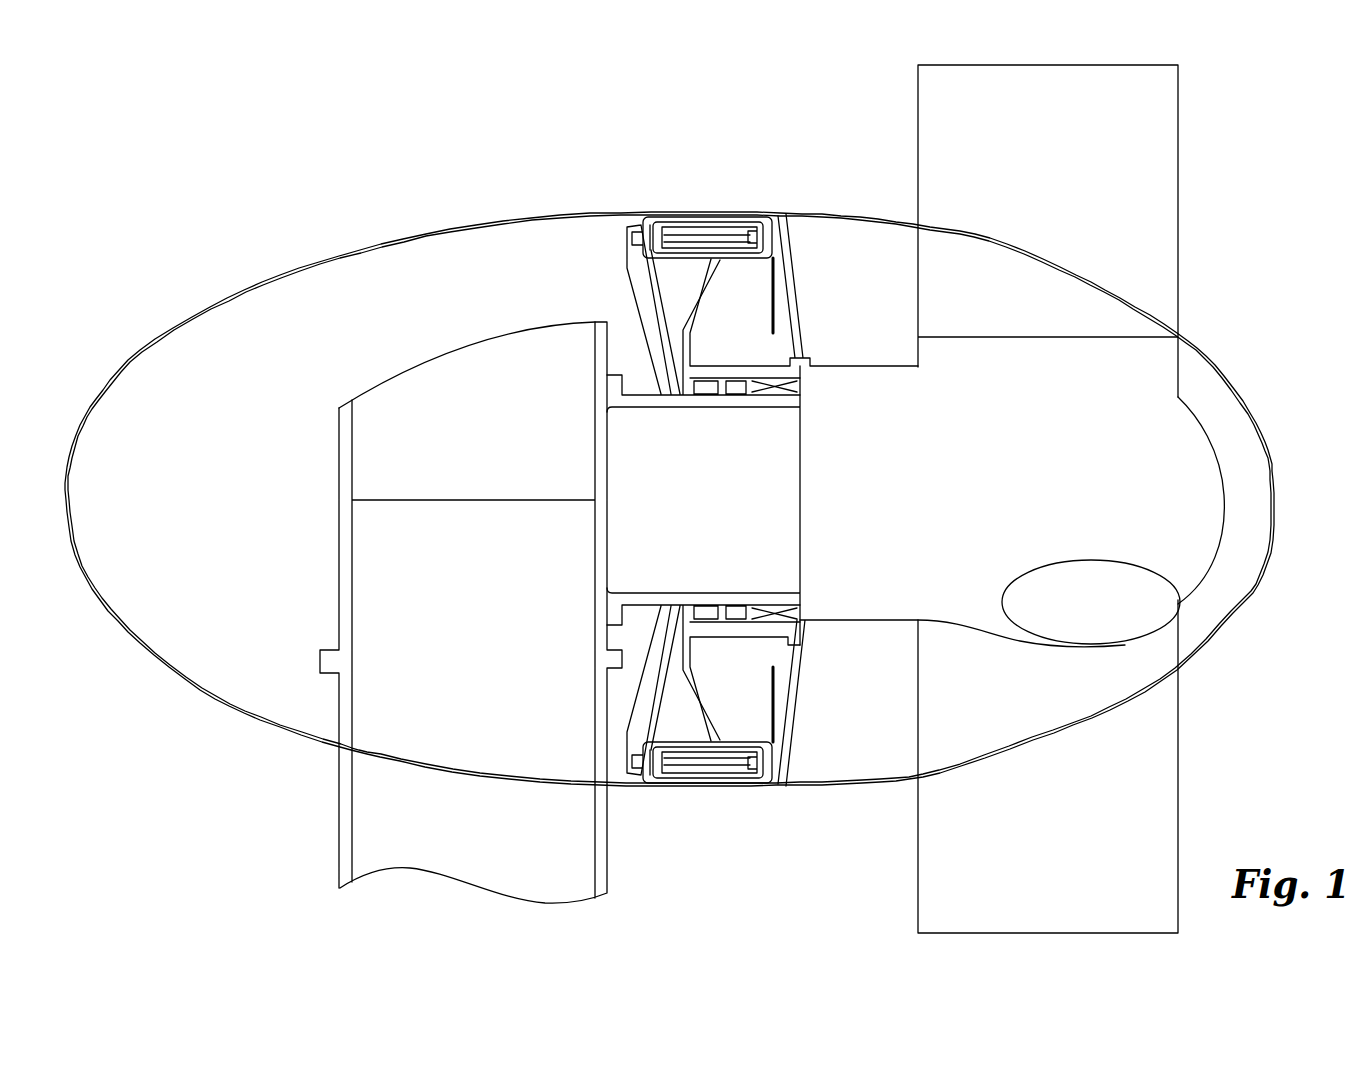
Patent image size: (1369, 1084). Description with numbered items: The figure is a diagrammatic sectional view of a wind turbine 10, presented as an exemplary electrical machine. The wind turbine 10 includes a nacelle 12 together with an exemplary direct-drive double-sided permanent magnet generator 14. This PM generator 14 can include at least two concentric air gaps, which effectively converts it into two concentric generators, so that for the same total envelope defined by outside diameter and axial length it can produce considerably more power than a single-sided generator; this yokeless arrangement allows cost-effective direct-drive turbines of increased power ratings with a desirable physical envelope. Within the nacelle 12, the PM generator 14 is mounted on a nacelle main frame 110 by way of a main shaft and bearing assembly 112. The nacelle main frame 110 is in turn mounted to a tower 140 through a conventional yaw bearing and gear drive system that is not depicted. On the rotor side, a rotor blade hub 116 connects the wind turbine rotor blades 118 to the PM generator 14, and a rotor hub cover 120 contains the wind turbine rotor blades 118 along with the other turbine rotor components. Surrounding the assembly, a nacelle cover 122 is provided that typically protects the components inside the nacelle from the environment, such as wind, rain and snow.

The wind turbine 10 is at (198, 202).
The nacelle 12 is at (365, 237).
The nacelle cover 122 is at (447, 228).
The main shaft and bearing assembly 112 is at (624, 431).
The direct-drive double-sided PM generator 14 is at (667, 215).
The nacelle main frame 110 is at (393, 372).
The wind turbine rotor blades 118 is at (1180, 115).
The rotor hub cover 120 is at (1188, 345).
The rotor blade hub 116 is at (1202, 583).
The tower 140 is at (345, 797).